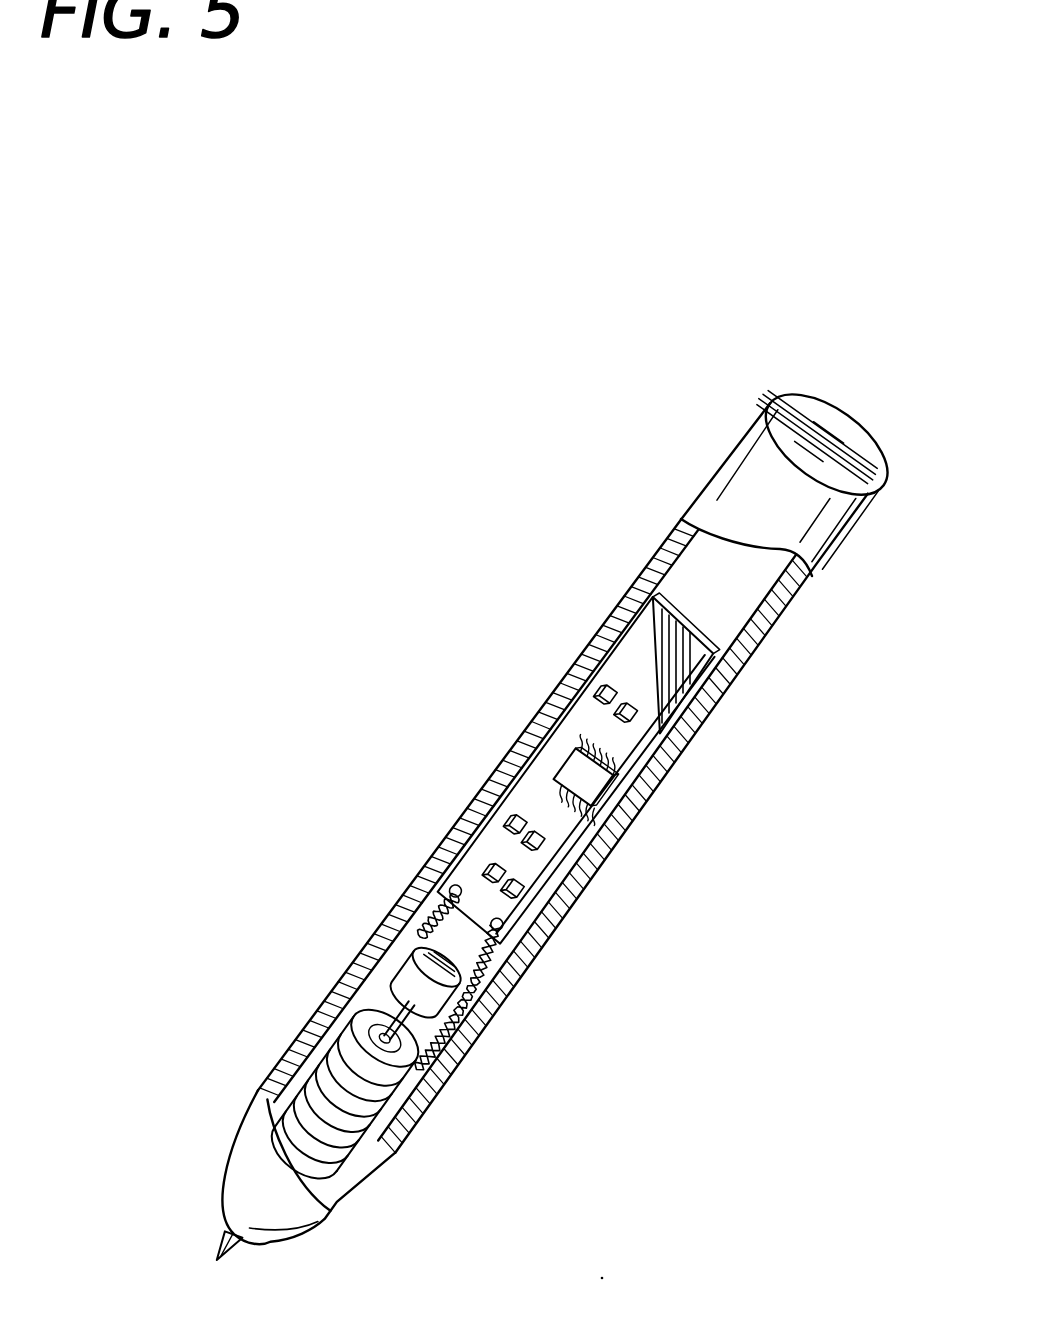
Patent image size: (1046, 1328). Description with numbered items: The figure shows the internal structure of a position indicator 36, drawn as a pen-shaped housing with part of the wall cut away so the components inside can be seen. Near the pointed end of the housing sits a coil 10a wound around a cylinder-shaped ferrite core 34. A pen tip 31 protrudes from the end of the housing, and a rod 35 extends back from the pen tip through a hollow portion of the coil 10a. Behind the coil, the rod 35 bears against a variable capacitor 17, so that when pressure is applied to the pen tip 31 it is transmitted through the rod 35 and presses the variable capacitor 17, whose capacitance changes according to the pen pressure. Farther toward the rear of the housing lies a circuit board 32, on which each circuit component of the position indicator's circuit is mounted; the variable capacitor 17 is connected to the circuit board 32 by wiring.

The position indicator 36 is at (770, 368).
The circuit board 32 is at (617, 727).
The rod 35 is at (395, 958).
The ferrite core 34 is at (352, 1006).
The variable capacitor 17 is at (476, 1018).
The coil 10a is at (377, 1122).
The pen tip 31 is at (220, 1238).